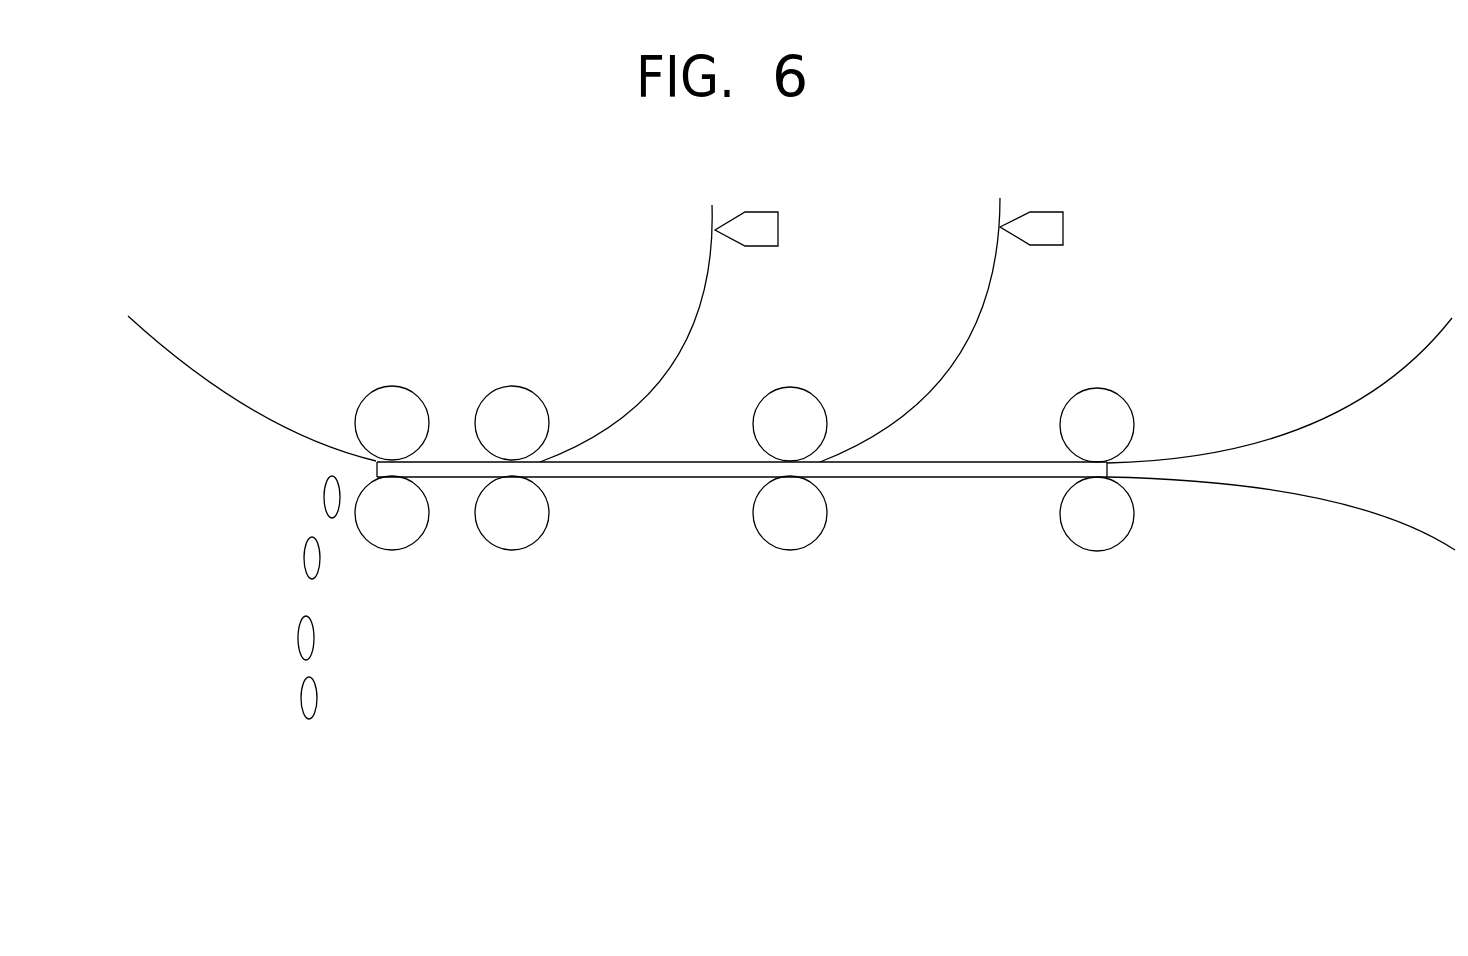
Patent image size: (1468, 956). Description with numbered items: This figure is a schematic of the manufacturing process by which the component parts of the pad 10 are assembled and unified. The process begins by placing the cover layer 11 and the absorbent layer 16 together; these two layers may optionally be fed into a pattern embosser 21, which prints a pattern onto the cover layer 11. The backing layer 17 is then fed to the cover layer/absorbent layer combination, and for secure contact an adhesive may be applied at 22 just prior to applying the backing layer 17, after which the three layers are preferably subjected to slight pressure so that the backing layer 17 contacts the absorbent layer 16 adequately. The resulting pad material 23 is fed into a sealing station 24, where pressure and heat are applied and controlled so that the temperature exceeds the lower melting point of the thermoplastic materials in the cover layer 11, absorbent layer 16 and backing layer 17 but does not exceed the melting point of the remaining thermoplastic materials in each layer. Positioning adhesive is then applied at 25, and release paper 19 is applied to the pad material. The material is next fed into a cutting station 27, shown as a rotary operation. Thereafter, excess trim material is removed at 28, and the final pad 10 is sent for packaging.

The pad 10 is at (326, 636).
The cover layer 11 is at (1385, 527).
The absorbent layer 16 is at (1372, 380).
The backing layer 17 is at (920, 386).
The release paper 19 is at (652, 355).
The pattern embosser 21 is at (1146, 405).
The adhesive application 22 is at (1074, 224).
The pad material 23 is at (687, 482).
The sealing station 24 is at (818, 552).
The positioning adhesive application 25 is at (790, 228).
The cutting station 27 is at (432, 392).
The trim removal 28 is at (226, 373).